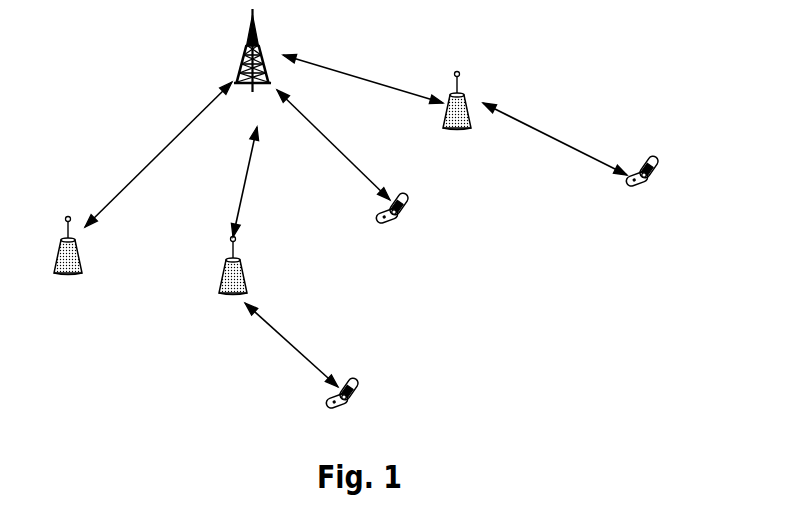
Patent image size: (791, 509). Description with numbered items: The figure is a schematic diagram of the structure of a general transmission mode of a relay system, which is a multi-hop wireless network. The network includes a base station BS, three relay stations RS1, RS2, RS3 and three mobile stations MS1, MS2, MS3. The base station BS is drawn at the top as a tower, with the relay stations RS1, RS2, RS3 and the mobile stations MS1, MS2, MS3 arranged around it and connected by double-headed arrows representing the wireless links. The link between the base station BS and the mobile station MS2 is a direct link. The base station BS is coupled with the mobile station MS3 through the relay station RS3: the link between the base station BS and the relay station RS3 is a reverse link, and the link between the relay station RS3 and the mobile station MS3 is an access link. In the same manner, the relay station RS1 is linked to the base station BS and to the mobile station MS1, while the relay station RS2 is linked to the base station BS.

The base station BS is at (252, 68).
The relay station RS1 is at (210, 272).
The relay station RS2 is at (70, 260).
The relay station RS3 is at (461, 116).
The mobile station MS1 is at (342, 406).
The mobile station MS2 is at (392, 221).
The mobile station MS3 is at (642, 184).